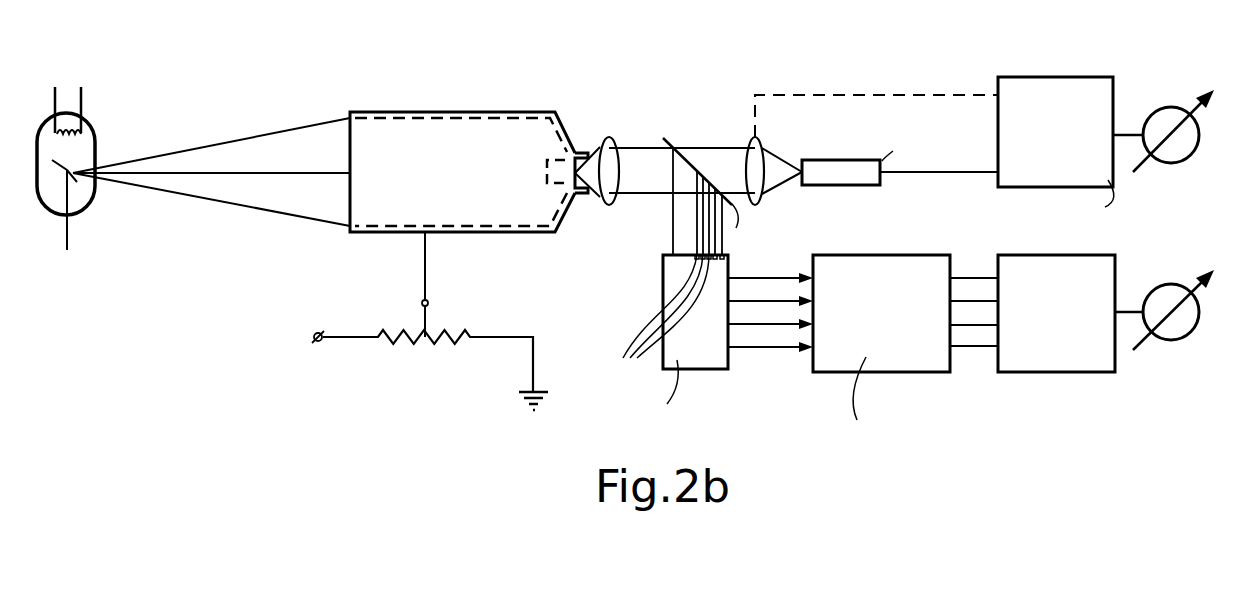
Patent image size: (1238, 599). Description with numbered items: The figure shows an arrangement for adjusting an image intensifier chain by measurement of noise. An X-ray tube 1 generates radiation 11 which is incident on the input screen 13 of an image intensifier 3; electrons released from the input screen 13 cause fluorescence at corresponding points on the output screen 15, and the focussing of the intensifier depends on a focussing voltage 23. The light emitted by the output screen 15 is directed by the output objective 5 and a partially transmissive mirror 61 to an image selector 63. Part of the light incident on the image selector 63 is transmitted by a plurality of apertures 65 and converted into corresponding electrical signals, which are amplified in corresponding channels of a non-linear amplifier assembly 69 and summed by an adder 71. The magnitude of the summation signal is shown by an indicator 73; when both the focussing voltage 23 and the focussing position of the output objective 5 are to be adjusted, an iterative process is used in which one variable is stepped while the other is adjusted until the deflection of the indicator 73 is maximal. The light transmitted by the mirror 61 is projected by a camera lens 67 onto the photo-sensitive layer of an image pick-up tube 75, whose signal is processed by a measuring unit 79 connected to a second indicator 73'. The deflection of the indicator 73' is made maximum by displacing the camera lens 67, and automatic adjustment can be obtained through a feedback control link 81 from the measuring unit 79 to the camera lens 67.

The X-ray tube 1 is at (96, 137).
The image intensifier 3 is at (388, 133).
The output objective 5 is at (608, 138).
The radiation 11 is at (252, 145).
The input screen 13 is at (345, 200).
The output screen 15 is at (574, 162).
The focussing voltage 23 is at (426, 284).
The partially transmissive mirror 61 is at (688, 150).
The image selector 63 is at (708, 360).
The apertures 65 is at (662, 321).
The camera lens 67 is at (744, 160).
The non-linear amplifier assembly 69 is at (912, 372).
The adder 71 is at (1090, 372).
The indicator 73 is at (1168, 340).
The indicator 73' is at (1168, 107).
The image pick-up tube 75 is at (856, 186).
The measuring unit 79 is at (1065, 77).
The feedback control link 81 is at (862, 95).